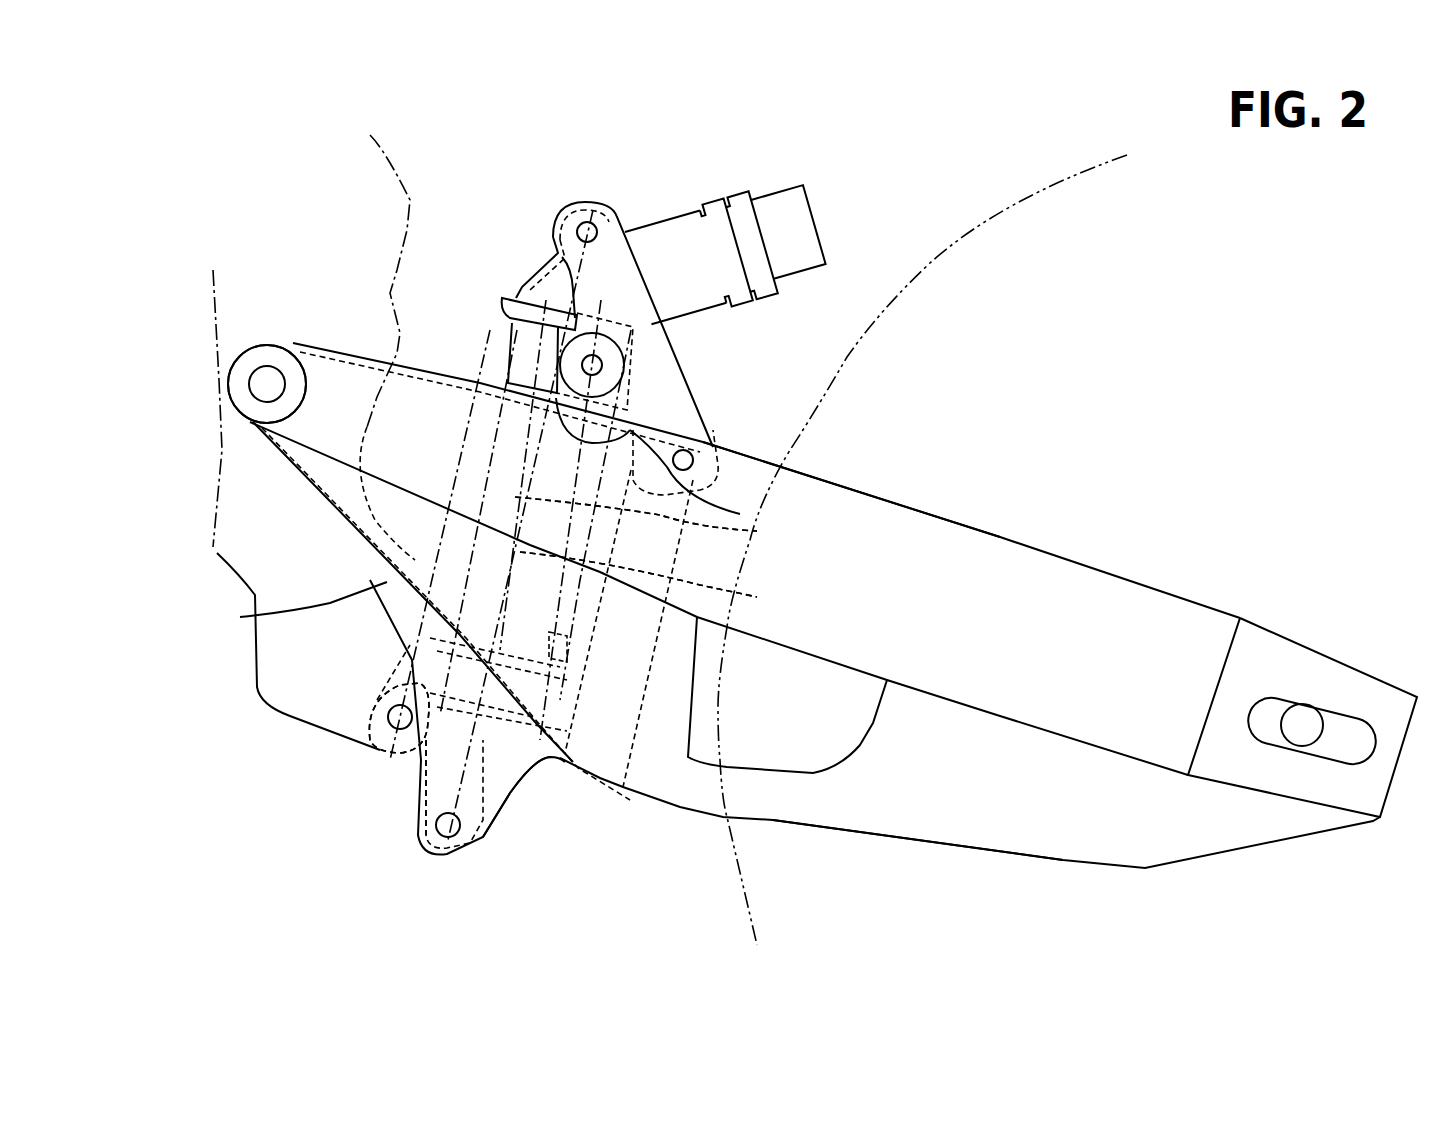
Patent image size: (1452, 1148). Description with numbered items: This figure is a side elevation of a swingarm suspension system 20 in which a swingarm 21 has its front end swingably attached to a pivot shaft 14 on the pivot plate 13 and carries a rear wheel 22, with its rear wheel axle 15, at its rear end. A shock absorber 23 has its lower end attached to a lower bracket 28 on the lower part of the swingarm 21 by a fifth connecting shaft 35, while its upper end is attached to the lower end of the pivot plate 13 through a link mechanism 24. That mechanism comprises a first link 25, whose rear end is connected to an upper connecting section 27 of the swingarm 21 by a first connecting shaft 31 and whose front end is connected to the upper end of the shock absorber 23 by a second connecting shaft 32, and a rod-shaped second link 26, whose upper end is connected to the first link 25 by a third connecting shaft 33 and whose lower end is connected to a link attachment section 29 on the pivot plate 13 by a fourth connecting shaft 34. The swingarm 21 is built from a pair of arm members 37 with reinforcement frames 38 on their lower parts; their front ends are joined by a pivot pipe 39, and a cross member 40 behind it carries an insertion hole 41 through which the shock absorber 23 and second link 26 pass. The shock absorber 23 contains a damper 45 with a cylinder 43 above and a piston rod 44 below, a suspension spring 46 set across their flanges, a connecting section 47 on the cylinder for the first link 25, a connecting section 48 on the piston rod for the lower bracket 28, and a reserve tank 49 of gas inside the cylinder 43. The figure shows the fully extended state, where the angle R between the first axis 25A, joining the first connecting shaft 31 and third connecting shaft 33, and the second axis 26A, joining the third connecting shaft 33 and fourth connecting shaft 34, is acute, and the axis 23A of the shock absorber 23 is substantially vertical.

The pivot plate 13 is at (213, 553).
The pivot shaft 14 is at (249, 384).
The rear wheel axle 15 is at (1303, 710).
The swingarm suspension system 20 is at (905, 112).
The swingarm 21 is at (918, 494).
The rear wheel 22 is at (1022, 196).
The shock absorber 23 is at (492, 288).
The axis 23A is at (588, 650).
The link mechanism 24 is at (369, 763).
The first link 25 is at (632, 238).
The first axis 25A is at (630, 400).
The second link 26 is at (412, 780).
The second axis 26A is at (445, 482).
The upper connecting section 27 is at (720, 450).
The lower bracket 28 is at (512, 798).
The link attachment section 29 is at (305, 723).
The first connecting shaft 31 is at (697, 447).
The second connecting shaft 32 is at (588, 221).
The third connecting shaft 33 is at (592, 354).
The fourth connecting shaft 34 is at (388, 730).
The fifth connecting shaft 35 is at (450, 838).
The arm member 37 is at (858, 486).
The reinforcement frame 38 is at (827, 829).
The pivot pipe 39 is at (250, 340).
The cross member 40 is at (283, 478).
The insertion hole 41 is at (363, 545).
The cylinder 43 is at (758, 531).
The piston rod 44 is at (758, 597).
The damper 45 is at (803, 505).
The suspension spring 46 is at (600, 620).
The connecting section 47 is at (551, 210).
The connecting section 48 is at (412, 818).
The reserve tank 49 is at (770, 192).
The angle R is at (670, 499).